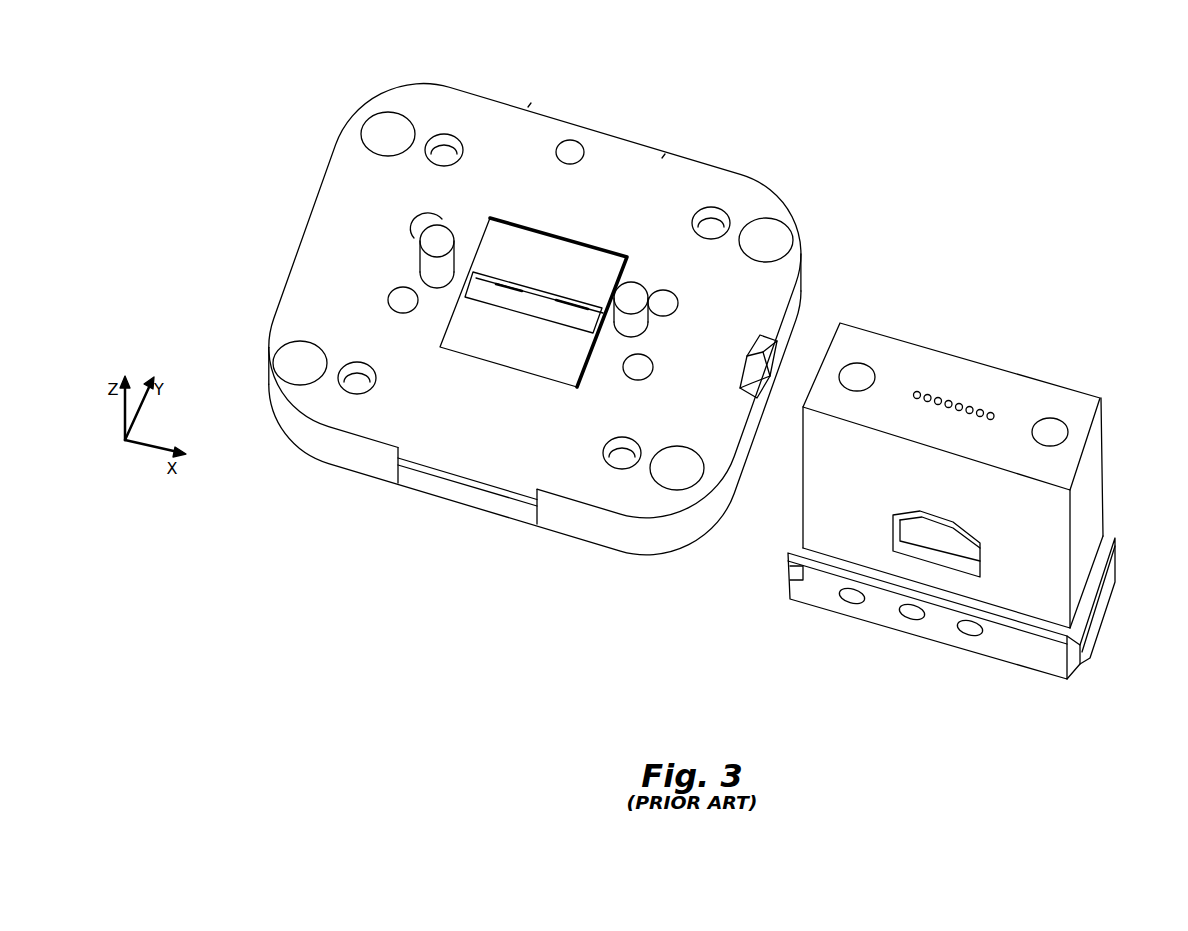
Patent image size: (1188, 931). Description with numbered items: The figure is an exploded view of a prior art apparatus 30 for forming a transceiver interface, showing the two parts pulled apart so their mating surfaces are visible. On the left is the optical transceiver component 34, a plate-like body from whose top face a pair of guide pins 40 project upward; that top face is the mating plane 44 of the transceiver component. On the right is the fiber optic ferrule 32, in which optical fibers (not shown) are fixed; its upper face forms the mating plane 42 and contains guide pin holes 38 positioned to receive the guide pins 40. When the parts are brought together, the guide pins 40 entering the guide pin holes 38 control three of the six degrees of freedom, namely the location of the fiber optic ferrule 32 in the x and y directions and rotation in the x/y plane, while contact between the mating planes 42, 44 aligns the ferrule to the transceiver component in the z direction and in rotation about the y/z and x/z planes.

The prior art apparatus 30 is at (959, 226).
The fiber optic ferrule 32 is at (1104, 474).
The optical transceiver component 34 is at (457, 88).
The guide pin holes 38 is at (848, 364).
The guide pins 40 is at (420, 266).
The mating plane 42 is at (968, 377).
The mating plane 44 is at (671, 163).